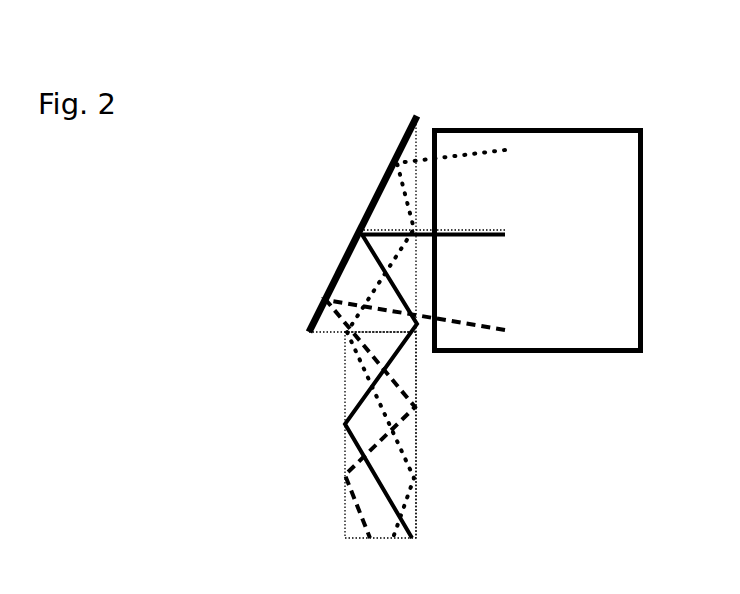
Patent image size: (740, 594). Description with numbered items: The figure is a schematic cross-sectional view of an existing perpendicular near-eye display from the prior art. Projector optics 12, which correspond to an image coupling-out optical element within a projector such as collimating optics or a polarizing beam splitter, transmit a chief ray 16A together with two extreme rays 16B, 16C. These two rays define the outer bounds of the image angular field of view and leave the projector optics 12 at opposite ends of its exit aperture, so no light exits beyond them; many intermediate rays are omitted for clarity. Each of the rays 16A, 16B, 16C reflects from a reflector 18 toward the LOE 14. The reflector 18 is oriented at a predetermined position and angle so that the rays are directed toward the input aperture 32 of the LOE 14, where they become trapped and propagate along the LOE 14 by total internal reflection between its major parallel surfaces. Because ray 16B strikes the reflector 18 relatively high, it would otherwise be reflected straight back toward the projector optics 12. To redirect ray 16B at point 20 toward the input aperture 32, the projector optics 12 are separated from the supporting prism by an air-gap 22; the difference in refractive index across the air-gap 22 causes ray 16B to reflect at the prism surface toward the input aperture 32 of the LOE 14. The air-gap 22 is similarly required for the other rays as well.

The projector optics 12 is at (510, 128).
The LOE 14 is at (418, 514).
The chief ray 16A is at (447, 380).
The extreme ray 16B is at (448, 339).
The extreme ray 16C is at (437, 419).
The reflector 18 is at (401, 141).
The point 20 is at (406, 226).
The air-gap 22 is at (422, 128).
The input aperture 32 is at (330, 333).